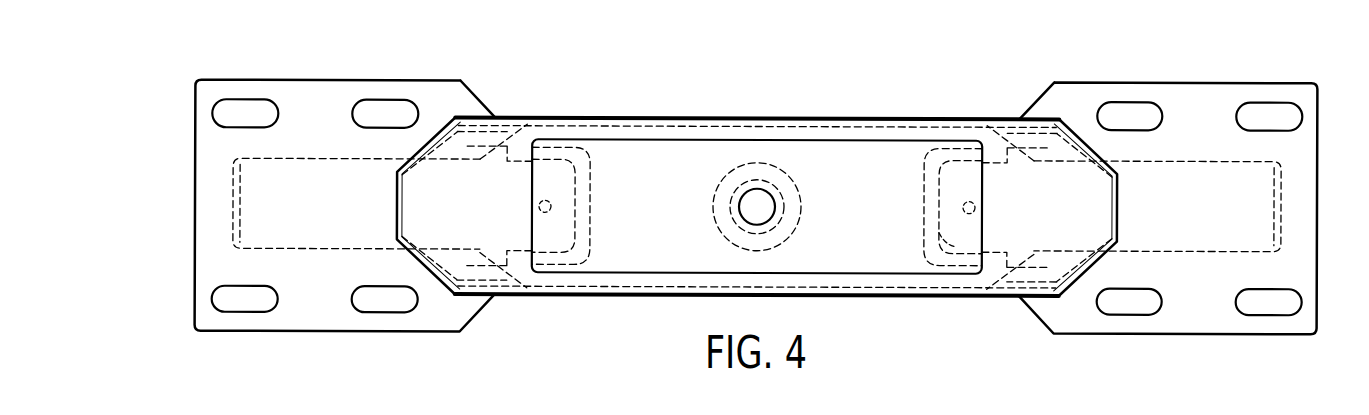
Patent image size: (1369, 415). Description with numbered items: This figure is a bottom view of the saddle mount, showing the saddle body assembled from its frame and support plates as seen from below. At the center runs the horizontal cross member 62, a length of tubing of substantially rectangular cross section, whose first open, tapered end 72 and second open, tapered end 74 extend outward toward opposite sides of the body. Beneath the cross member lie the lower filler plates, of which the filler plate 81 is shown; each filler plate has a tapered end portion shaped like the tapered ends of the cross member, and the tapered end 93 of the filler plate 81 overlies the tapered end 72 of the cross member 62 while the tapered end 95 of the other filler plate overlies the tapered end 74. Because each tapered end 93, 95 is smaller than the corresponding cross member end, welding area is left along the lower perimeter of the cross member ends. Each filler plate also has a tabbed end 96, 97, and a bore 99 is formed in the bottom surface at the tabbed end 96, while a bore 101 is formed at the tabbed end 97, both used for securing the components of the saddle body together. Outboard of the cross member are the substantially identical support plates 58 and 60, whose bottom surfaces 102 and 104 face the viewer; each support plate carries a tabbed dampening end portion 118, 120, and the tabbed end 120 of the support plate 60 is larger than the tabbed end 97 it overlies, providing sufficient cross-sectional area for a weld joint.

The support plate 58 is at (1316, 84).
The support plate 60 is at (198, 80).
The horizontal cross member 62 is at (800, 116).
The first open, tapered end 72 is at (1079, 141).
The second open, tapered end 74 is at (396, 203).
The filler plate/force absorbing member 81 is at (1005, 190).
The tapered end portion 93 is at (1113, 210).
The tapered end portion 95 is at (405, 203).
The tabbed end 96 is at (955, 233).
The tabbed end 97 is at (578, 215).
The bore 99 is at (976, 213).
The bore 101 is at (538, 207).
The bottom surface 102 is at (1192, 105).
The bottom surface 104 is at (304, 90).
The tabbed dampening end portion 118 is at (925, 175).
The tabbed dampening end portion 120 is at (590, 186).